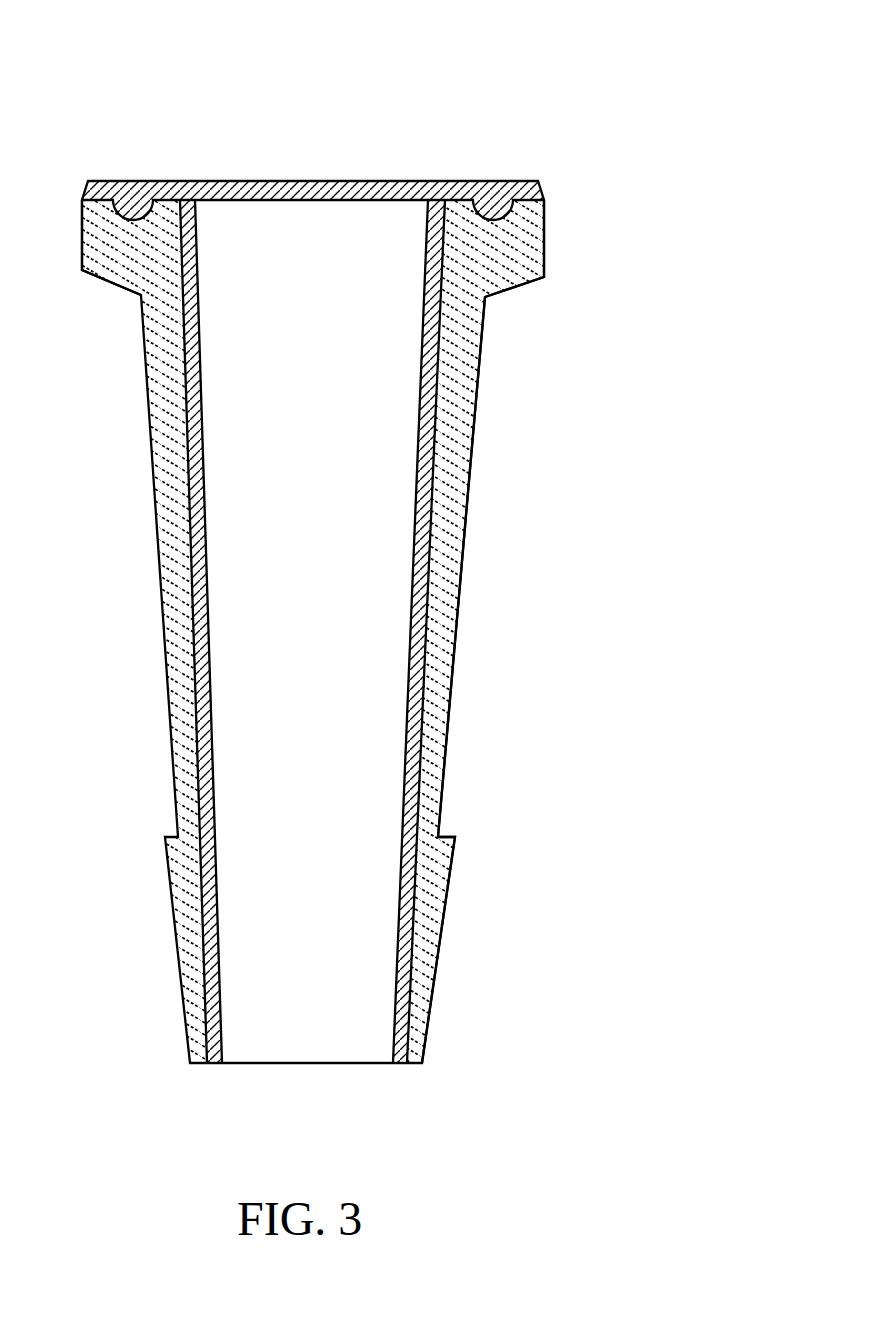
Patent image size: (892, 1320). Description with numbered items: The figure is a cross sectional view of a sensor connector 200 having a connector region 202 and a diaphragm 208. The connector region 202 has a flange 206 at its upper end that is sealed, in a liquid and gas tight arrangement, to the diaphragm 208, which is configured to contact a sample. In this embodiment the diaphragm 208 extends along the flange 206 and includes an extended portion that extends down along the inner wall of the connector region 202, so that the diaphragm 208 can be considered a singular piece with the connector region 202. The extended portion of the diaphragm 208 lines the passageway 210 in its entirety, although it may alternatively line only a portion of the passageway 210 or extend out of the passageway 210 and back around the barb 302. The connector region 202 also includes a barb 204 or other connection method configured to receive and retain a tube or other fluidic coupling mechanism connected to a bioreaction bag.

The sensor connector 200 is at (533, 76).
The connector region 202 is at (480, 419).
The barb 204 is at (422, 932).
The flange 206 is at (544, 258).
The diaphragm 208 is at (235, 181).
The passageway 210 is at (207, 982).
The barb 302 is at (458, 587).